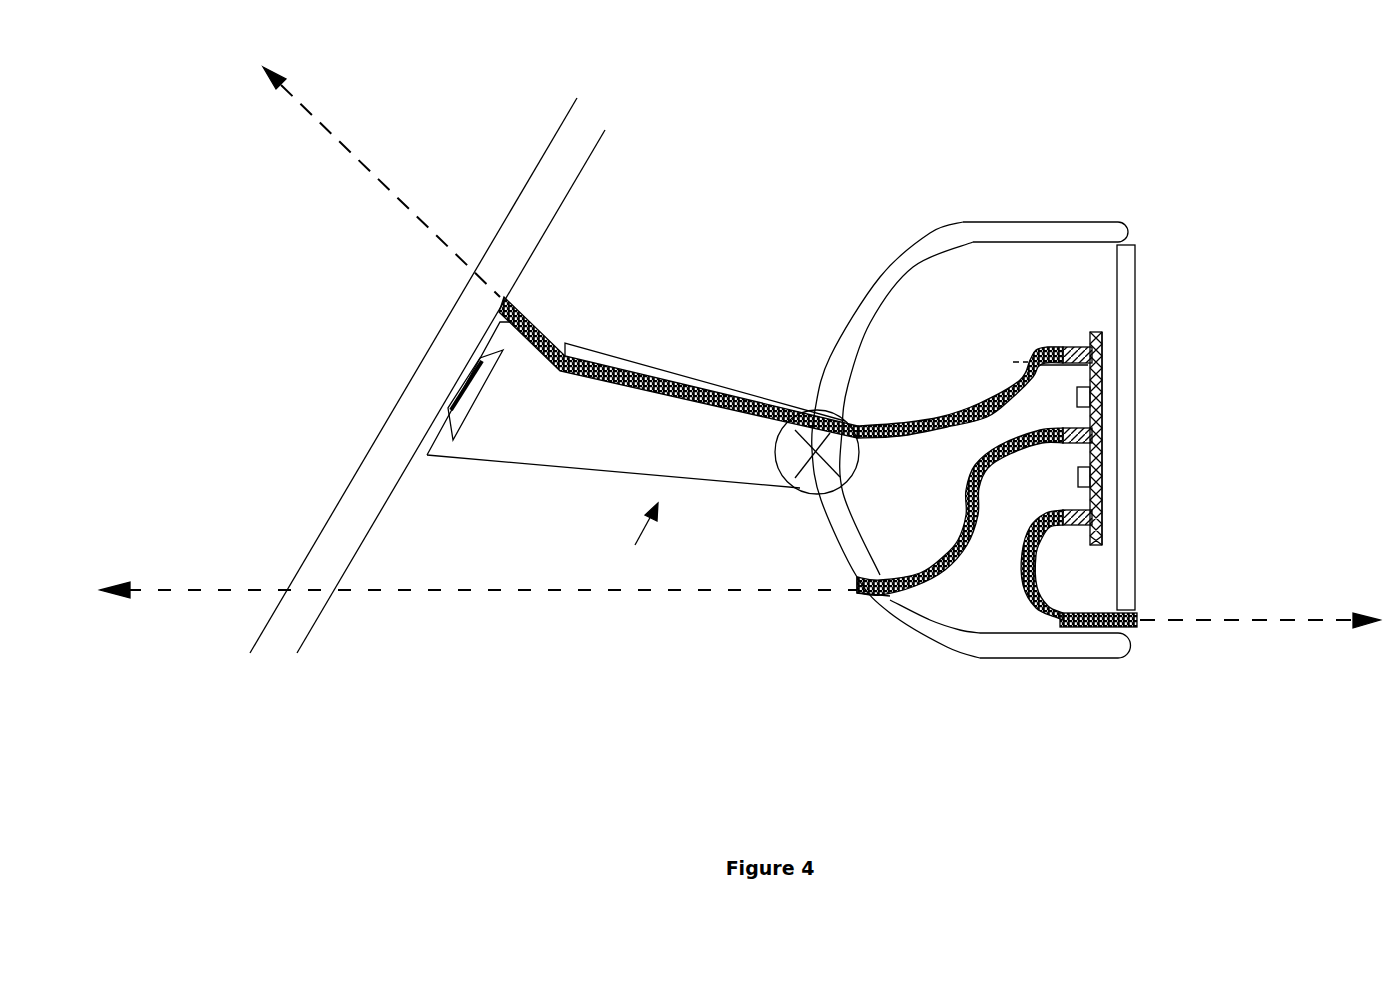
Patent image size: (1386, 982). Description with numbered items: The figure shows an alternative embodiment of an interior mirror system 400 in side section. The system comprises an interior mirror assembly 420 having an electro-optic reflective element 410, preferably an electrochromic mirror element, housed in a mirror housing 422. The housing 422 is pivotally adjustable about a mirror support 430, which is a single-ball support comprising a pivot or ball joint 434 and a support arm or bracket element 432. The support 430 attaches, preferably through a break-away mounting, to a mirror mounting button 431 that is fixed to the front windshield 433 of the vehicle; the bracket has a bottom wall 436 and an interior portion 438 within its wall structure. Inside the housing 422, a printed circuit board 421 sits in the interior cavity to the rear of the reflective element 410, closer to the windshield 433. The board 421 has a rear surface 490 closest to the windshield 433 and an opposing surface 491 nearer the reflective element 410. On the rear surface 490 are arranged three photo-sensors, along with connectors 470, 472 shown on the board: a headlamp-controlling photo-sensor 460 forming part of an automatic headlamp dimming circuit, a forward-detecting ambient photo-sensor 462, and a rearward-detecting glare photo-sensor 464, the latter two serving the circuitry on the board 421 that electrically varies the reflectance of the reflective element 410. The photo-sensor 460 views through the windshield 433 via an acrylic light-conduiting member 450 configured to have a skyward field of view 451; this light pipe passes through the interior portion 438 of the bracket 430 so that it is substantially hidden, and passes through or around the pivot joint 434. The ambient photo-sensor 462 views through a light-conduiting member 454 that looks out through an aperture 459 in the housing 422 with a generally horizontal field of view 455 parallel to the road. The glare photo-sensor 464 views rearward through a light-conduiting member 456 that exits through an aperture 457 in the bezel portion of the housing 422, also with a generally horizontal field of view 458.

The interior mirror system 400 is at (410, 716).
The electro-optic reflective element 410 is at (1128, 298).
The interior mirror assembly 420 is at (1105, 195).
The printed circuit board 421 is at (1102, 420).
The mirror housing 422 is at (940, 223).
The mirror support 430 is at (635, 537).
The mirror mounting button 431 is at (478, 376).
The support arm 432 is at (703, 462).
The front windshield 433 is at (392, 452).
The pivot joint 434 is at (818, 475).
The housing bottom wall 436 is at (603, 475).
The interior portion of bracket 438 is at (416, 440).
The light-conduiting member 450 is at (715, 398).
The skyward field of view 451 is at (367, 158).
The light-conduiting member 454 is at (940, 559).
The horizontal field of view 455 is at (205, 590).
The light-conduiting member 456 is at (1038, 612).
The aperture 457 is at (1140, 625).
The horizontal field of view 458 is at (1298, 620).
The aperture 459 is at (860, 585).
The photo-sensor 460 is at (1068, 350).
The photo-sensor 462 is at (1078, 432).
The photo-sensor 464 is at (1073, 527).
The upper connector 470 is at (1082, 395).
The lower connector 472 is at (1077, 482).
The rear surface 490 is at (1131, 402).
The opposing surface 491 is at (1102, 362).